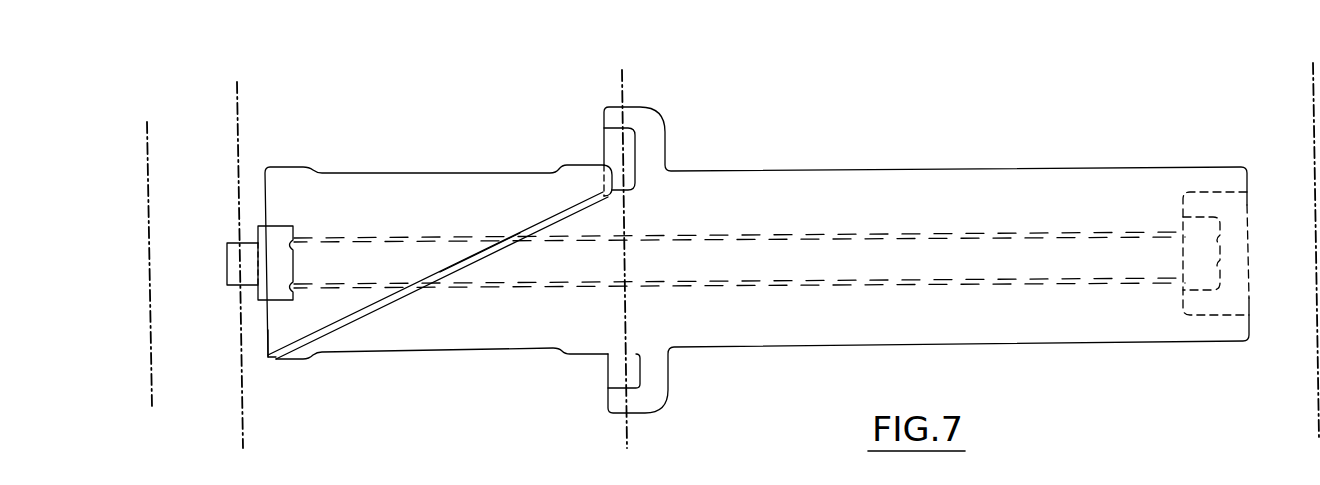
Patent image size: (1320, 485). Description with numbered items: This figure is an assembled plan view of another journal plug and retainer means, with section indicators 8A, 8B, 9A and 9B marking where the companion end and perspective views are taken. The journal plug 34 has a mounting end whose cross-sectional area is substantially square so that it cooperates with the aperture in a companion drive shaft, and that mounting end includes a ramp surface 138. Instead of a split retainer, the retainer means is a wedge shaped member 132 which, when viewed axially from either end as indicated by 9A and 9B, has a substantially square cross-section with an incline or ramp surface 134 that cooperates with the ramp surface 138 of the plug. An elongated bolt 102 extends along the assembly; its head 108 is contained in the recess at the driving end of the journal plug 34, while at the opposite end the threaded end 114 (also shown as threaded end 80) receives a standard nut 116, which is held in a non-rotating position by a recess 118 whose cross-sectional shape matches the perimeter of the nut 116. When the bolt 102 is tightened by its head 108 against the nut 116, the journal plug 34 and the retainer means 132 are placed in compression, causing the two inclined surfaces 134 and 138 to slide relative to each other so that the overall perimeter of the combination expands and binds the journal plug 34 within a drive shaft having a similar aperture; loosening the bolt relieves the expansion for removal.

The journal plug 34 is at (757, 260).
The threaded end 80 is at (1232, 297).
The elongated bolt 102 is at (932, 258).
The head 108 is at (1200, 253).
The threaded end 114 is at (226, 256).
The nut 116 is at (258, 300).
The recess 118 is at (257, 227).
The wedge shaped member 132 is at (423, 198).
The ramp surface 134 is at (362, 310).
The ramp surface 138 is at (485, 257).
The section line 8A is at (265, 264).
The section line 8B is at (1290, 251).
The section line 9A is at (176, 265).
The section line 9B is at (598, 259).